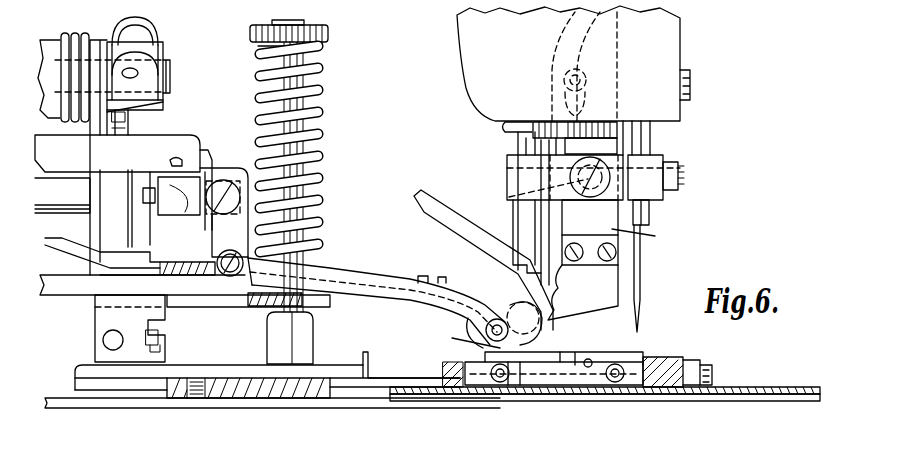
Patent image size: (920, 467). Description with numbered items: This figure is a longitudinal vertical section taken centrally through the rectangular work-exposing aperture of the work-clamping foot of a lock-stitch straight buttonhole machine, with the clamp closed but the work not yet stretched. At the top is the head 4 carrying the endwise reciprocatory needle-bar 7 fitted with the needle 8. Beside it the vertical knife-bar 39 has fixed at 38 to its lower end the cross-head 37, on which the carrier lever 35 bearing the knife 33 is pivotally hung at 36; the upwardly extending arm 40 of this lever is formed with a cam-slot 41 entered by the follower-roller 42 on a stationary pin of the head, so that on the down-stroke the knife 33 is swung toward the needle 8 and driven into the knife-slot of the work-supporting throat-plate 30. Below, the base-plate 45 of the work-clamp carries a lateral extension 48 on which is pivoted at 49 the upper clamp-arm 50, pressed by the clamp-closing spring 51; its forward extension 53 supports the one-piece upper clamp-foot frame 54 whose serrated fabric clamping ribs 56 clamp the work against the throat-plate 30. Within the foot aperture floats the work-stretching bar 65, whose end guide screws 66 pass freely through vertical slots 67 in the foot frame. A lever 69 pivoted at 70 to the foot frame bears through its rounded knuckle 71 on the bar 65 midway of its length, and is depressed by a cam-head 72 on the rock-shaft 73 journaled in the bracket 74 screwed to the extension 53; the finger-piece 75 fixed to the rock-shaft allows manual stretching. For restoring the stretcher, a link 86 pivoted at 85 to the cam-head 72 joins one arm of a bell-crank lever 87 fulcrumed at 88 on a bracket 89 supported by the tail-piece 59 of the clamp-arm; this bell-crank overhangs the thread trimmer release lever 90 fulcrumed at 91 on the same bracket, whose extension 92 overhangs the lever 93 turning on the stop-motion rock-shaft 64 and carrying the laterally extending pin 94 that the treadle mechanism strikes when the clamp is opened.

The head 4 is at (678, 60).
The needle-bar 7 is at (649, 213).
The needle 8 is at (641, 272).
The throat-plate 30 is at (600, 401).
The knife 33 is at (613, 297).
The carrier lever 35 is at (646, 237).
The pivot 36 is at (512, 194).
The cross-head 37 is at (507, 165).
The fixing point of cross-head 38 is at (678, 170).
The knife-bar 39 is at (650, 132).
The upwardly extending arm 40 is at (617, 52).
The cam-slot 41 is at (558, 50).
The follower-roller 42 is at (564, 96).
The base-plate 45 is at (312, 400).
The lateral extension 48 is at (75, 383).
The pivot of clamp-arm 49 is at (103, 338).
The upper clamp-arm 50 is at (310, 308).
The clamp-closing spring 51 is at (322, 180).
The forward extension 53 is at (452, 338).
The upper clamp-foot frame 54 is at (683, 360).
The serrated fabric clamping ribs 56 is at (443, 372).
The tail-piece 59 is at (68, 292).
The rock-shaft 64 is at (170, 70).
The work-stretching bar 65 is at (565, 385).
The end guide screws 66 is at (500, 382).
The vertical slots 67 is at (462, 364).
The lever 69 is at (600, 352).
The pivot of lever 70 is at (592, 361).
The rounded knuckle 71 is at (545, 352).
The cam-head 72 is at (514, 385).
The rock-shaft 73 is at (517, 303).
The bracket 74 is at (440, 284).
The finger-piece 75 is at (435, 205).
The pivotal connection 85 is at (492, 320).
The link 86 is at (335, 270).
The bell-crank lever 87 is at (244, 180).
The fulcrum of bell-crank lever 88 is at (210, 175).
The bracket 89 is at (182, 162).
The thread trimmer release lever 90 is at (172, 190).
The fulcrum of release lever 91 is at (150, 188).
The extension 92 is at (117, 153).
The lever 93 is at (95, 250).
The laterally extending pin 94 is at (78, 198).